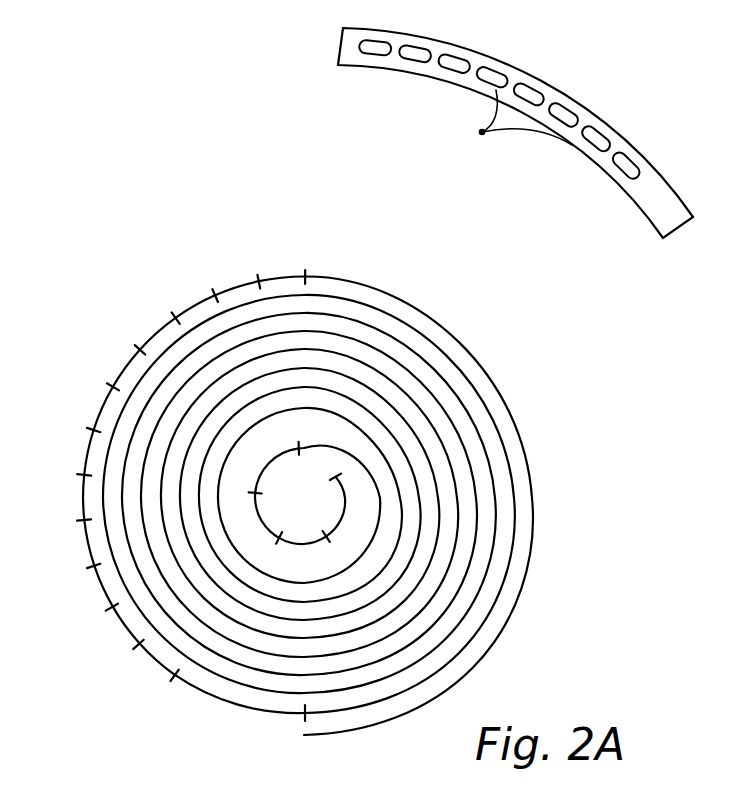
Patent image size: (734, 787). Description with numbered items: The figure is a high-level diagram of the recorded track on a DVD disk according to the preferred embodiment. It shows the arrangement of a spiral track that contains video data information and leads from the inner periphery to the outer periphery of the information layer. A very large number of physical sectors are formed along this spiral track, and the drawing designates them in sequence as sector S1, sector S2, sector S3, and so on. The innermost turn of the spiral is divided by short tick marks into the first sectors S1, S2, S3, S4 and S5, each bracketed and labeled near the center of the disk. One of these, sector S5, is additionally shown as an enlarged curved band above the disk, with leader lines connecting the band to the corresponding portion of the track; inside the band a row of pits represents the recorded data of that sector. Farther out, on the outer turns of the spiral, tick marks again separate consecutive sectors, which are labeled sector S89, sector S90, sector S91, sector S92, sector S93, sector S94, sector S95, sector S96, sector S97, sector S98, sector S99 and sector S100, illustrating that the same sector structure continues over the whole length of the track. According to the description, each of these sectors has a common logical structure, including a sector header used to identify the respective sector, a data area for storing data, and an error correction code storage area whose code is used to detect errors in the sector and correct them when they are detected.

The physical sector S1 is at (314, 566).
The physical sector S2 is at (247, 533).
The physical sector S3 is at (237, 467).
The physical sector S4 is at (268, 467).
The physical sector S5 is at (663, 238).
The physical sector S89 is at (141, 662).
The physical sector S90 is at (107, 626).
The physical sector S91 is at (81, 585).
The physical sector S92 is at (64, 542).
The physical sector S93 is at (61, 497).
The physical sector S94 is at (67, 451).
The physical sector S95 is at (84, 406).
The physical sector S96 is at (111, 365).
The physical sector S97 is at (150, 329).
The physical sector S98 is at (187, 298).
The physical sector S99 is at (232, 276).
The physical sector S100 is at (278, 263).